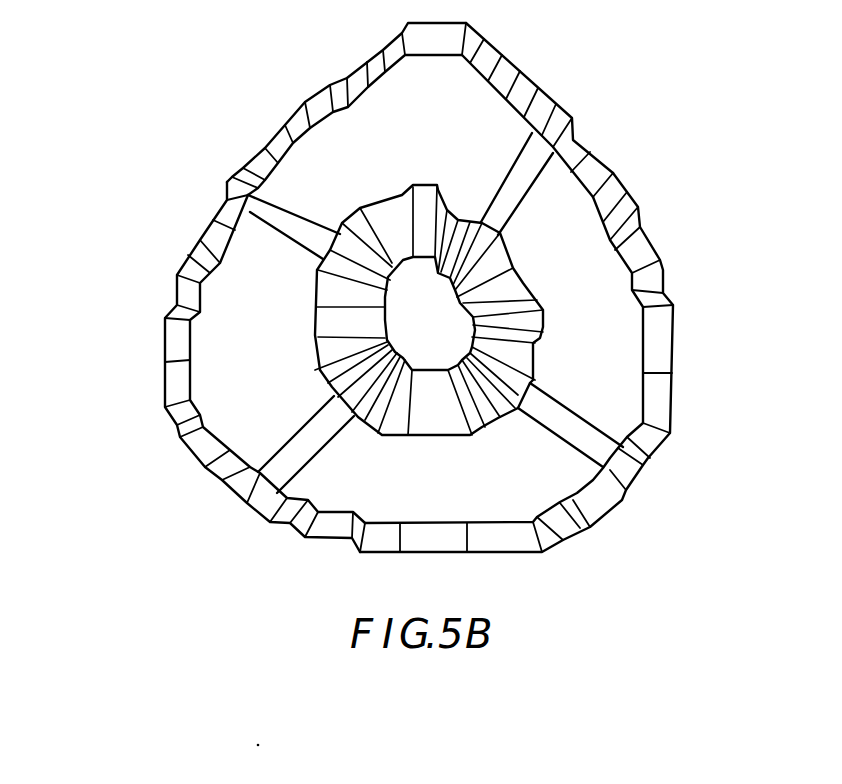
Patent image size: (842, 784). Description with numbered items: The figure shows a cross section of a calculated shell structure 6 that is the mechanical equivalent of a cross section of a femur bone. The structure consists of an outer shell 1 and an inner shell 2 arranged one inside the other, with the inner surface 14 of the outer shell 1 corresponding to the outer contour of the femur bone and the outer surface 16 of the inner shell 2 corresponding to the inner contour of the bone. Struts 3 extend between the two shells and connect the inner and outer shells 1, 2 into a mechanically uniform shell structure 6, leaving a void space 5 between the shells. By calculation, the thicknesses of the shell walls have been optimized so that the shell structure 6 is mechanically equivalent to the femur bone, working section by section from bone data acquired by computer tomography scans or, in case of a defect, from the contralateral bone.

The outer shell 1 is at (635, 253).
The inner shell 2 is at (517, 360).
The struts 3 is at (272, 213).
The void space 5 is at (325, 178).
The shell structure 6 is at (597, 148).
The inner surface 14 is at (190, 393).
The outer surface 16 is at (313, 305).